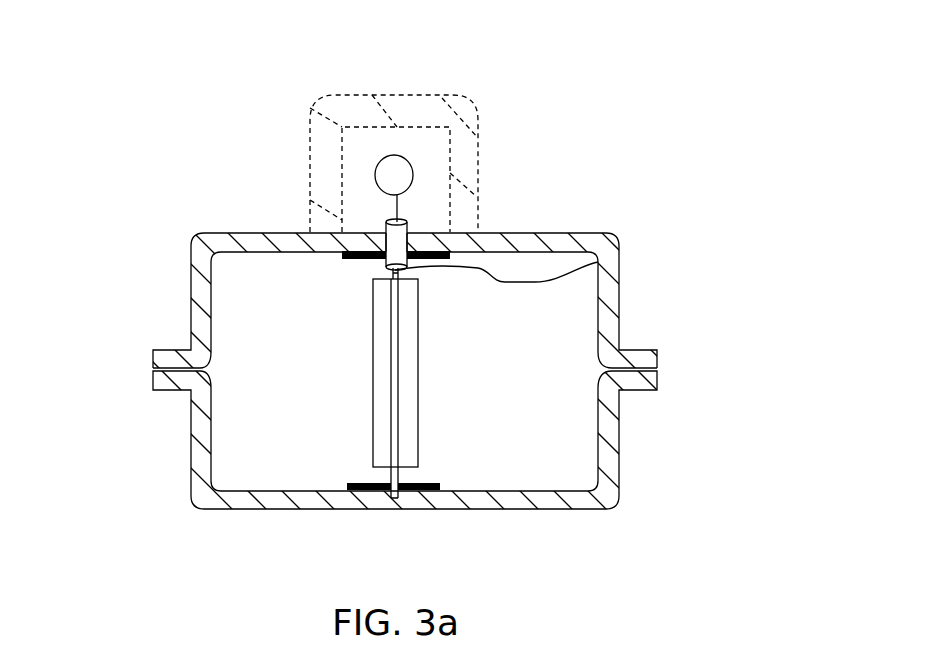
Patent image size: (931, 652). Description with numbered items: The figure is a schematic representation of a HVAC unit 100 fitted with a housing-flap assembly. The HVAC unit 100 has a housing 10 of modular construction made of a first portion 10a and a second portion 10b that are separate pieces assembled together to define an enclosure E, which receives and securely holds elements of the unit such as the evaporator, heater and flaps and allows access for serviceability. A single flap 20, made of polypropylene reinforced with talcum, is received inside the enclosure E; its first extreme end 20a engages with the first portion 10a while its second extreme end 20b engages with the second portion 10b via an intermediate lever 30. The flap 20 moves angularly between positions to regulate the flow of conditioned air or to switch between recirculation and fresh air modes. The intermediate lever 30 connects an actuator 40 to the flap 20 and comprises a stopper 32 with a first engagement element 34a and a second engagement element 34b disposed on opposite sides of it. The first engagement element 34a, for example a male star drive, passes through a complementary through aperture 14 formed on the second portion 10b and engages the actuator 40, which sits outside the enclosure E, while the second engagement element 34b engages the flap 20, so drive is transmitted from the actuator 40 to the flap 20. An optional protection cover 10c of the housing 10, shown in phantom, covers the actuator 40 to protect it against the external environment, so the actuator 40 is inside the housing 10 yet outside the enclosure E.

The HVAC unit 100 is at (693, 187).
The HVAC housing 10 is at (619, 297).
The first portion 10a is at (200, 428).
The second portion 10b is at (197, 245).
The protection cover 10c is at (437, 101).
The through aperture 14 is at (415, 233).
The flap 20 is at (382, 304).
The first extreme end 20a is at (393, 472).
The second extreme end 20b is at (398, 276).
The intermediate lever 30 is at (386, 223).
The stopper 32 is at (477, 232).
The first engagement element 34a is at (397, 204).
The second engagement element 34b is at (383, 267).
The actuator 40 is at (392, 175).
The enclosure E is at (567, 432).